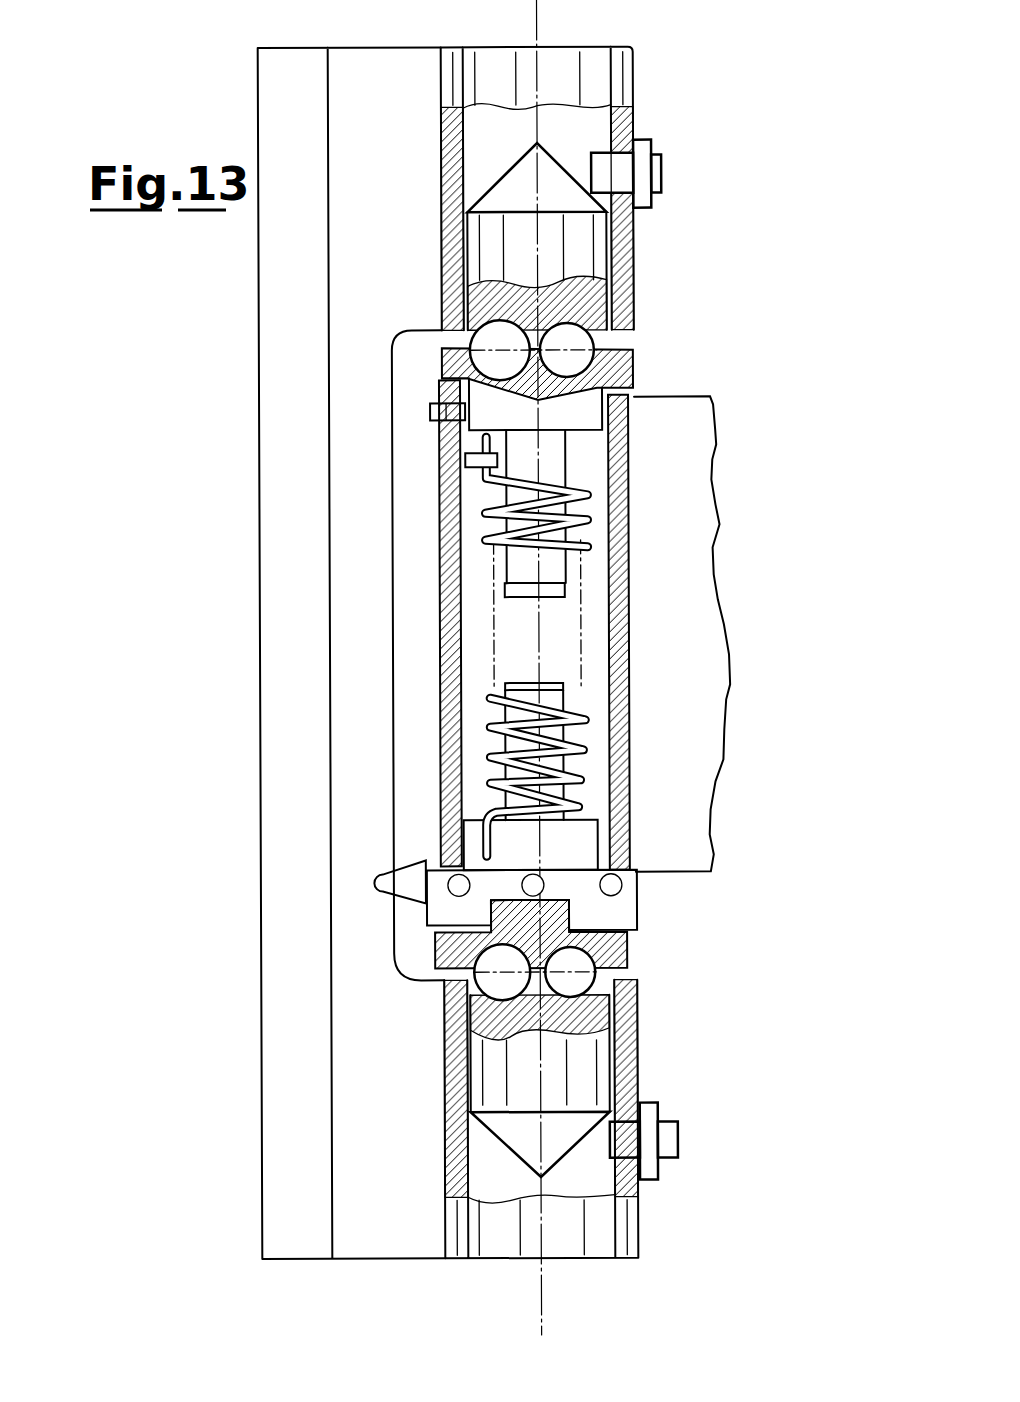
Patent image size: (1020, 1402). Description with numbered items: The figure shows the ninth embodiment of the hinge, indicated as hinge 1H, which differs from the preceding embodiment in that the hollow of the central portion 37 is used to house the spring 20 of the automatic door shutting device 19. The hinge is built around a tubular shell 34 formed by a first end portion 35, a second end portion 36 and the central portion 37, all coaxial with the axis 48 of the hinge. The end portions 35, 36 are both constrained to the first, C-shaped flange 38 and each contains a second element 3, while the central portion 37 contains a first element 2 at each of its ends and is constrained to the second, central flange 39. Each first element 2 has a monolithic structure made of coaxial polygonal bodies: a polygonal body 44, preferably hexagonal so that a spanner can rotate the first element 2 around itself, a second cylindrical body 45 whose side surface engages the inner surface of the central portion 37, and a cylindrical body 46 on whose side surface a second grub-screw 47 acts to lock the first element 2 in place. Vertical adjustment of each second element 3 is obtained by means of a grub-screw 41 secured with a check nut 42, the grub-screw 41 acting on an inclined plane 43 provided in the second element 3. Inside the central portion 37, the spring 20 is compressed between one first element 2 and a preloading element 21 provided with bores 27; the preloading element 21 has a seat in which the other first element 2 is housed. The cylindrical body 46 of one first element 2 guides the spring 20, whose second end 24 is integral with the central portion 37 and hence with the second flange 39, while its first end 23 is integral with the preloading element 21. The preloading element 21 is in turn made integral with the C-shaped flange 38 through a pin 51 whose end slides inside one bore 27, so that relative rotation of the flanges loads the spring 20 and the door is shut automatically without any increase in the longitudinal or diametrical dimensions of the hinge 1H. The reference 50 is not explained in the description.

The hinge 1H is at (782, 230).
The first element 2 is at (560, 464).
The second element 3 is at (485, 240).
The automatic door shutting device 19 is at (423, 572).
The spring 20 is at (578, 756).
The preloading element 21 is at (585, 849).
The first end 23 is at (487, 840).
The second end 24 is at (485, 440).
The bores 27 is at (615, 886).
The tubular shell 34 is at (703, 1147).
The first end portion 35 is at (618, 105).
The second end portion 36 is at (625, 1049).
The central portion 37 is at (620, 659).
The C-shaped flange 38 is at (343, 696).
The second flange 39 is at (705, 543).
The grub-screw 41 is at (663, 172).
The check nut 42 is at (645, 207).
The inclined plane 43 is at (515, 187).
The polygonal body 44 is at (625, 371).
The second cylindrical body 45 is at (595, 418).
The cylindrical body 46 is at (555, 584).
The second grub-screw 47 is at (435, 403).
The axis 48 is at (540, 27).
The strap 50 is at (434, 931).
The pin 51 is at (382, 882).